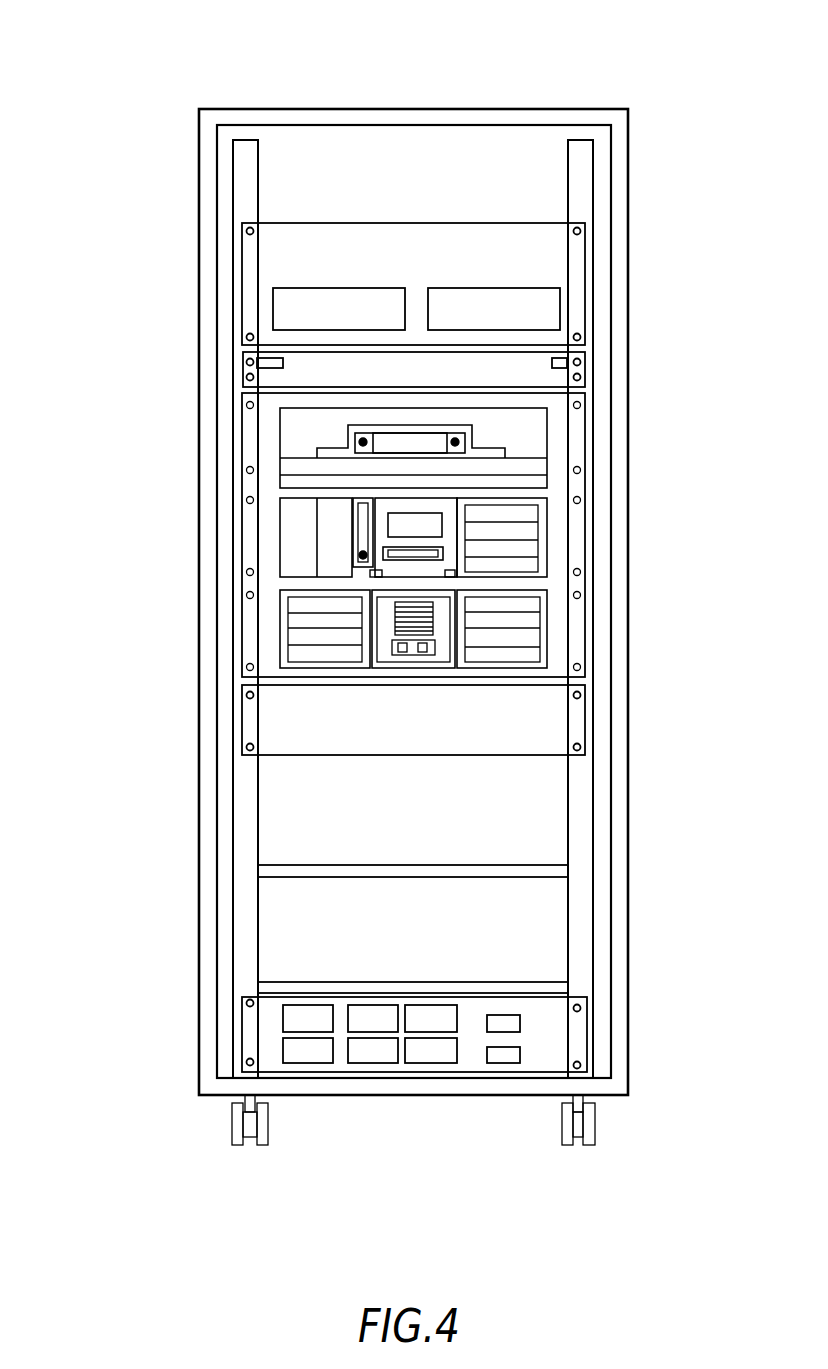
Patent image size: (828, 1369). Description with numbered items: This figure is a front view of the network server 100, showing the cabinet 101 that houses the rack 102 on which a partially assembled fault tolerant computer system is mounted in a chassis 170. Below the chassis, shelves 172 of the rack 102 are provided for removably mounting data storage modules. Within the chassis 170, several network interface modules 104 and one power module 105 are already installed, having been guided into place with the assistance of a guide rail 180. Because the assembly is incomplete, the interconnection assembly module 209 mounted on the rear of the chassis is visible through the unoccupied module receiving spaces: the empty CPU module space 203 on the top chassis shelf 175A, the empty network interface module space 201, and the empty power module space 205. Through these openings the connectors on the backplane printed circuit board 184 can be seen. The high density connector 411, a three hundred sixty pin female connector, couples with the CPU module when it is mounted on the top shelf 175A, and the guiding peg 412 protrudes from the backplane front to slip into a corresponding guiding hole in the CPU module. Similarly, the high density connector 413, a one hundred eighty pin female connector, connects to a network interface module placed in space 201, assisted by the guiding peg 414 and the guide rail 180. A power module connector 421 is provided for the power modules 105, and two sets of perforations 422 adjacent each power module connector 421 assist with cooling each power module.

The server 100 is at (84, 107).
The cabinet 101 is at (455, 108).
The rack 102 is at (256, 190).
The network interface modules 104 is at (293, 623).
The power module 105 is at (427, 633).
The chassis 170 is at (252, 515).
The shelves 172 is at (300, 982).
The top chassis shelf 175A is at (523, 497).
The guide rail 180 is at (375, 578).
The backplane printed circuit board 184 is at (477, 421).
The network interface module space 201 is at (297, 570).
The CPU module space 203 is at (323, 438).
The power module space 205 is at (425, 543).
The interconnection assembly module 209 is at (318, 419).
The high density connector 411 is at (417, 440).
The guiding peg 412 is at (363, 438).
The high density connector 413 is at (355, 522).
The guiding peg 414 is at (356, 553).
The power module connector 421 is at (453, 555).
The perforations 422 is at (432, 517).